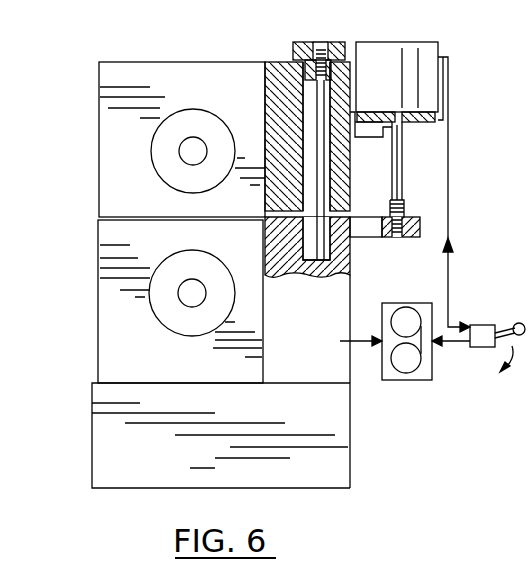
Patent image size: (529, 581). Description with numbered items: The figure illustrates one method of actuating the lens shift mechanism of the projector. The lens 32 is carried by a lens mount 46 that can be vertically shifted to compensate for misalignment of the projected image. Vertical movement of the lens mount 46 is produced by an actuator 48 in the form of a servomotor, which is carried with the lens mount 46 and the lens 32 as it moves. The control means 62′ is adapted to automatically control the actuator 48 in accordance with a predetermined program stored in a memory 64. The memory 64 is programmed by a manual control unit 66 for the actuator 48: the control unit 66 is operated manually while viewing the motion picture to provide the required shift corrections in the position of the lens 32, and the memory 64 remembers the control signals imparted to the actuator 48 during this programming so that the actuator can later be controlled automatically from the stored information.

The lens mount 46 is at (153, 82).
The lens 32 is at (206, 100).
The actuator 48 is at (395, 40).
The memory 64 is at (341, 343).
The control means 62′ is at (395, 380).
The manual control unit 66 is at (482, 328).